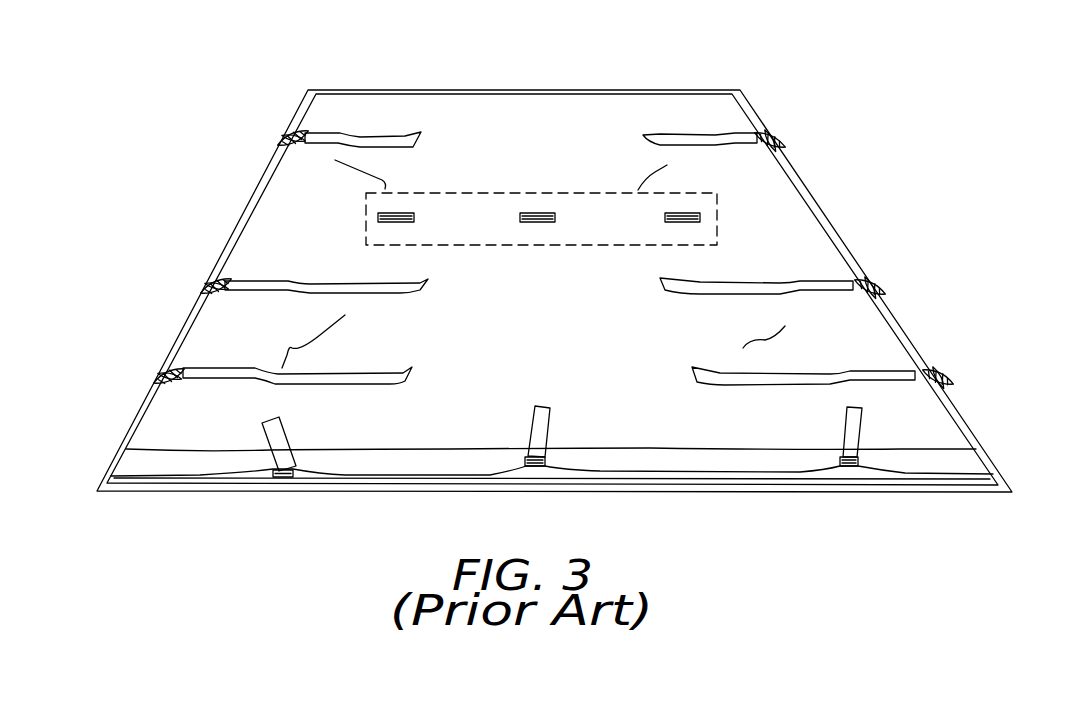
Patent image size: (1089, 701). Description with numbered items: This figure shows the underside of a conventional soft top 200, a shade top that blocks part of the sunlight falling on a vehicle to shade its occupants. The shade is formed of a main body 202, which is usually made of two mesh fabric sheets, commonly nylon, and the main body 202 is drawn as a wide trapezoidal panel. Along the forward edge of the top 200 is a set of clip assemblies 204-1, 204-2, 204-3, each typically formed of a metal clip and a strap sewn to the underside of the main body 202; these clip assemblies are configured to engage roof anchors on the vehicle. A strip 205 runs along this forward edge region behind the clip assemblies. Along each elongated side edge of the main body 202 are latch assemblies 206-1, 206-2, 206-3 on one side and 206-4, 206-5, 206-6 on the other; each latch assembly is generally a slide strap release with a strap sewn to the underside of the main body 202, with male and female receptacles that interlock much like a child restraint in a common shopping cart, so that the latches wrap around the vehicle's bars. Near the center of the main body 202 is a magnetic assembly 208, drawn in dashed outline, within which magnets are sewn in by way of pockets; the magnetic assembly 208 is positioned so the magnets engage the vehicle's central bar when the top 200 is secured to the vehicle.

The soft top 200 is at (967, 71).
The main body 202 is at (588, 132).
The clip assembly 204-1 is at (313, 445).
The clip assembly 204-2 is at (547, 403).
The clip assembly 204-3 is at (838, 447).
The fabric strip 205 is at (622, 448).
The latch assembly 206-1 is at (152, 368).
The latch assembly 206-2 is at (207, 277).
The latch assembly 206-3 is at (275, 138).
The latch assembly 206-4 is at (783, 136).
The latch assembly 206-5 is at (890, 282).
The latch assembly 206-6 is at (949, 368).
The magnetic assembly 208 is at (566, 248).